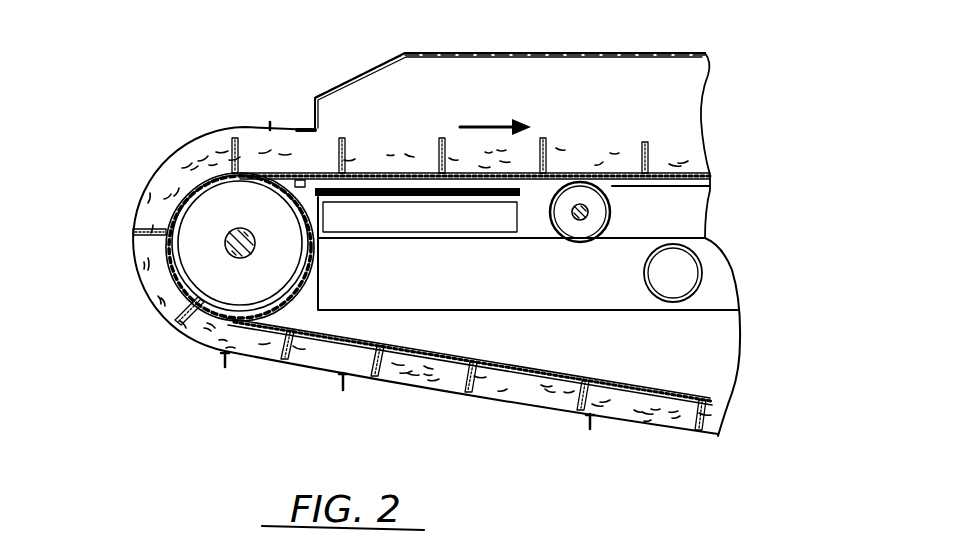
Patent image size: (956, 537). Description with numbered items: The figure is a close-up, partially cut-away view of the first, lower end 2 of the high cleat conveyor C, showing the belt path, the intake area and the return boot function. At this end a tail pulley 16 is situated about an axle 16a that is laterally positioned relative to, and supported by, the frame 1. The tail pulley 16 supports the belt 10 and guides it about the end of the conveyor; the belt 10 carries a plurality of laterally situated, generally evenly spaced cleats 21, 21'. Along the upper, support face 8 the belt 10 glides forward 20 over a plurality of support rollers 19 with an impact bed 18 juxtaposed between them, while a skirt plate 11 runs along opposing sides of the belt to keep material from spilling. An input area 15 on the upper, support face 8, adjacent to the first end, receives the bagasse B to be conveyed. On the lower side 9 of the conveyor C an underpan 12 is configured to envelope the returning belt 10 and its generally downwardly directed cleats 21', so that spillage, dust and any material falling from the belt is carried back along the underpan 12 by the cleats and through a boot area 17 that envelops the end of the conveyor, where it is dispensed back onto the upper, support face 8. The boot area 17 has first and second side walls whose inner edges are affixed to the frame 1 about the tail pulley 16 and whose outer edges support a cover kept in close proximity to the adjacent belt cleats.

The frame 1 is at (680, 218).
The first, lower end 2 is at (147, 180).
The upper, support face 8 is at (680, 160).
The lower side 9 is at (710, 377).
The belt 10 is at (668, 394).
The skirt plate 11 is at (512, 60).
The underpan 12 is at (313, 375).
The input area 15 is at (408, 70).
The tail pulley 16 is at (200, 263).
The axle 16a is at (232, 230).
The boot area 17 is at (130, 241).
The impact bed 18 is at (298, 172).
The support rollers 19 is at (580, 195).
The forward direction 20 is at (450, 128).
The cleats 21 is at (669, 126).
The cleats 21' is at (518, 424).
The bagasse B is at (423, 380).
The conveyor C is at (738, 265).